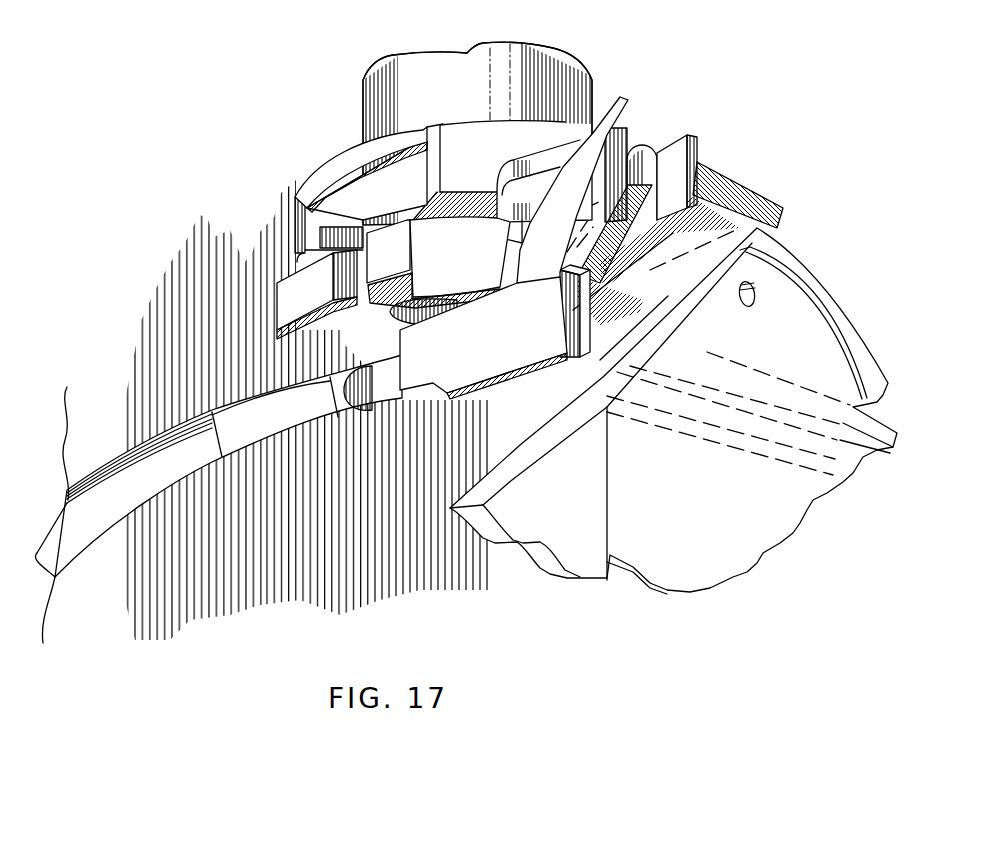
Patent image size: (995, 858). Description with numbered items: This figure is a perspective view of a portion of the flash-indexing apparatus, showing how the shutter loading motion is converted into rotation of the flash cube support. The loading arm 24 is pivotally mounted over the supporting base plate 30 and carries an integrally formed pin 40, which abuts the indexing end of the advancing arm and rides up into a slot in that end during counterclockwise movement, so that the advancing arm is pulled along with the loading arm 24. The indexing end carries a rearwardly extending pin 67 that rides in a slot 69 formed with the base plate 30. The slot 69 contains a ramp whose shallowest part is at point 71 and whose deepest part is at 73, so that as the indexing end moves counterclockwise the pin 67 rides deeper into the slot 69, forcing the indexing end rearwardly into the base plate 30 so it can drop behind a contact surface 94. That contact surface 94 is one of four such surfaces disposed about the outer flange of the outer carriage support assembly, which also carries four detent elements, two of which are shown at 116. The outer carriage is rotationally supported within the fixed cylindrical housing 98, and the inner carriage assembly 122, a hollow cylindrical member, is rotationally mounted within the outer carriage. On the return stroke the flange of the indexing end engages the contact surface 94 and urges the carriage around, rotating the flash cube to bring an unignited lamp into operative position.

The loading arm 24 is at (790, 338).
The base plate 30 is at (200, 365).
The pin 40 is at (605, 326).
The pin 67 is at (410, 362).
The slot 69 is at (190, 455).
The point 71 is at (347, 413).
The deepest part of the slot 73 is at (78, 543).
The contact surface 94 is at (314, 306).
The cylindrical housing 98 is at (525, 53).
The detent element 116 is at (358, 135).
The inner carriage assembly 122 is at (462, 273).